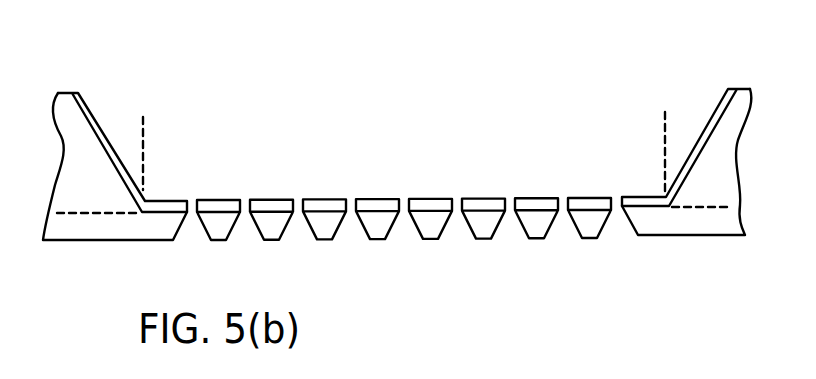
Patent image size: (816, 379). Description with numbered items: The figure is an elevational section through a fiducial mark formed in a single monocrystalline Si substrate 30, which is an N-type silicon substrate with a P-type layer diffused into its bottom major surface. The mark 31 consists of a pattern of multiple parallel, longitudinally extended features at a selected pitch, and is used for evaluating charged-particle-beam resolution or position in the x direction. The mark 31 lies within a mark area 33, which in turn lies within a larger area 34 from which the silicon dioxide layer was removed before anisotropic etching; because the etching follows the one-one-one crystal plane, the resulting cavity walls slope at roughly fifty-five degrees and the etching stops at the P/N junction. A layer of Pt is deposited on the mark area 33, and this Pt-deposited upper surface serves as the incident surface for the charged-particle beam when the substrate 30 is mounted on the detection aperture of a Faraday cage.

The monocrystalline Si substrate 30 is at (712, 163).
The mark 31 is at (635, 247).
The mark area 33 is at (658, 140).
The area 34 is at (728, 78).
The Pt layer Pt is at (273, 198).